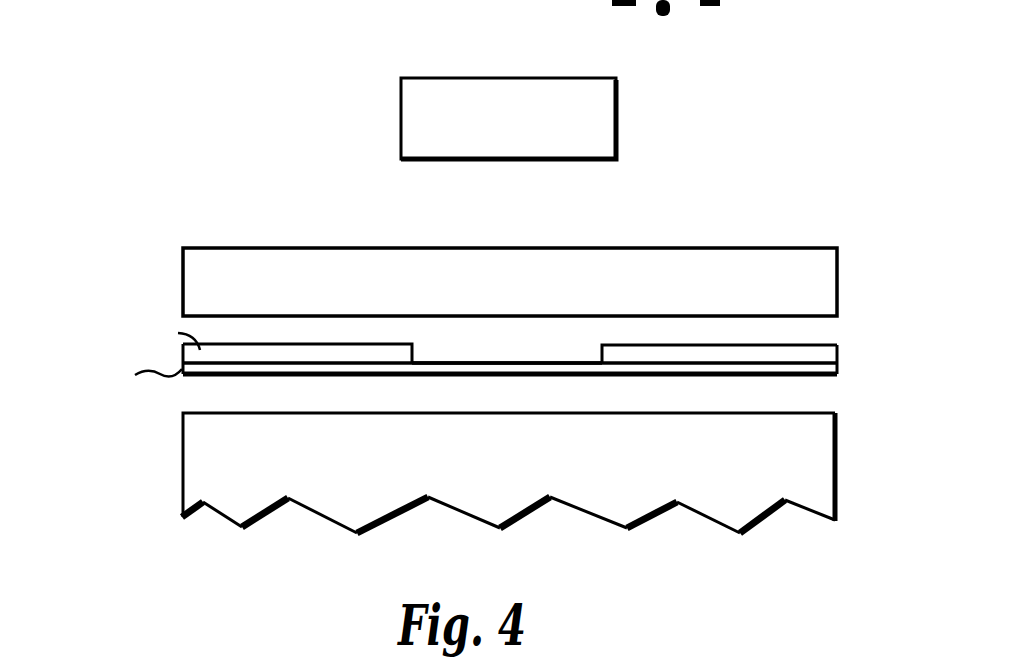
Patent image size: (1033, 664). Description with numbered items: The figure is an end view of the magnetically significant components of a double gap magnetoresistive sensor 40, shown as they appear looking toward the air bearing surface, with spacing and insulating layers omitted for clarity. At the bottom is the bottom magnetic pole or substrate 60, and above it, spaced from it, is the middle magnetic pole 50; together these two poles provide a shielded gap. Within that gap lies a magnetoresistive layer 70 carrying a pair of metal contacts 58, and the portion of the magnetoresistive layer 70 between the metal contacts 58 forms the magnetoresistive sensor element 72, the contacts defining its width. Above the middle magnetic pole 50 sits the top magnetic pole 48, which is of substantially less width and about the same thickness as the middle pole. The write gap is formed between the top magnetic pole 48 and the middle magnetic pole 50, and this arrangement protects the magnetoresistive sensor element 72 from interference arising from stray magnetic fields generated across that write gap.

The magnetoresistive sensor 40 is at (328, 76).
The top magnetic pole 48 is at (618, 93).
The middle magnetic pole 50 is at (733, 259).
The metal contacts 58 is at (412, 346).
The bottom magnetic pole or substrate 60 is at (818, 472).
The magnetoresistive layer 70 is at (838, 374).
The magnetoresistive sensor element 72 is at (526, 372).